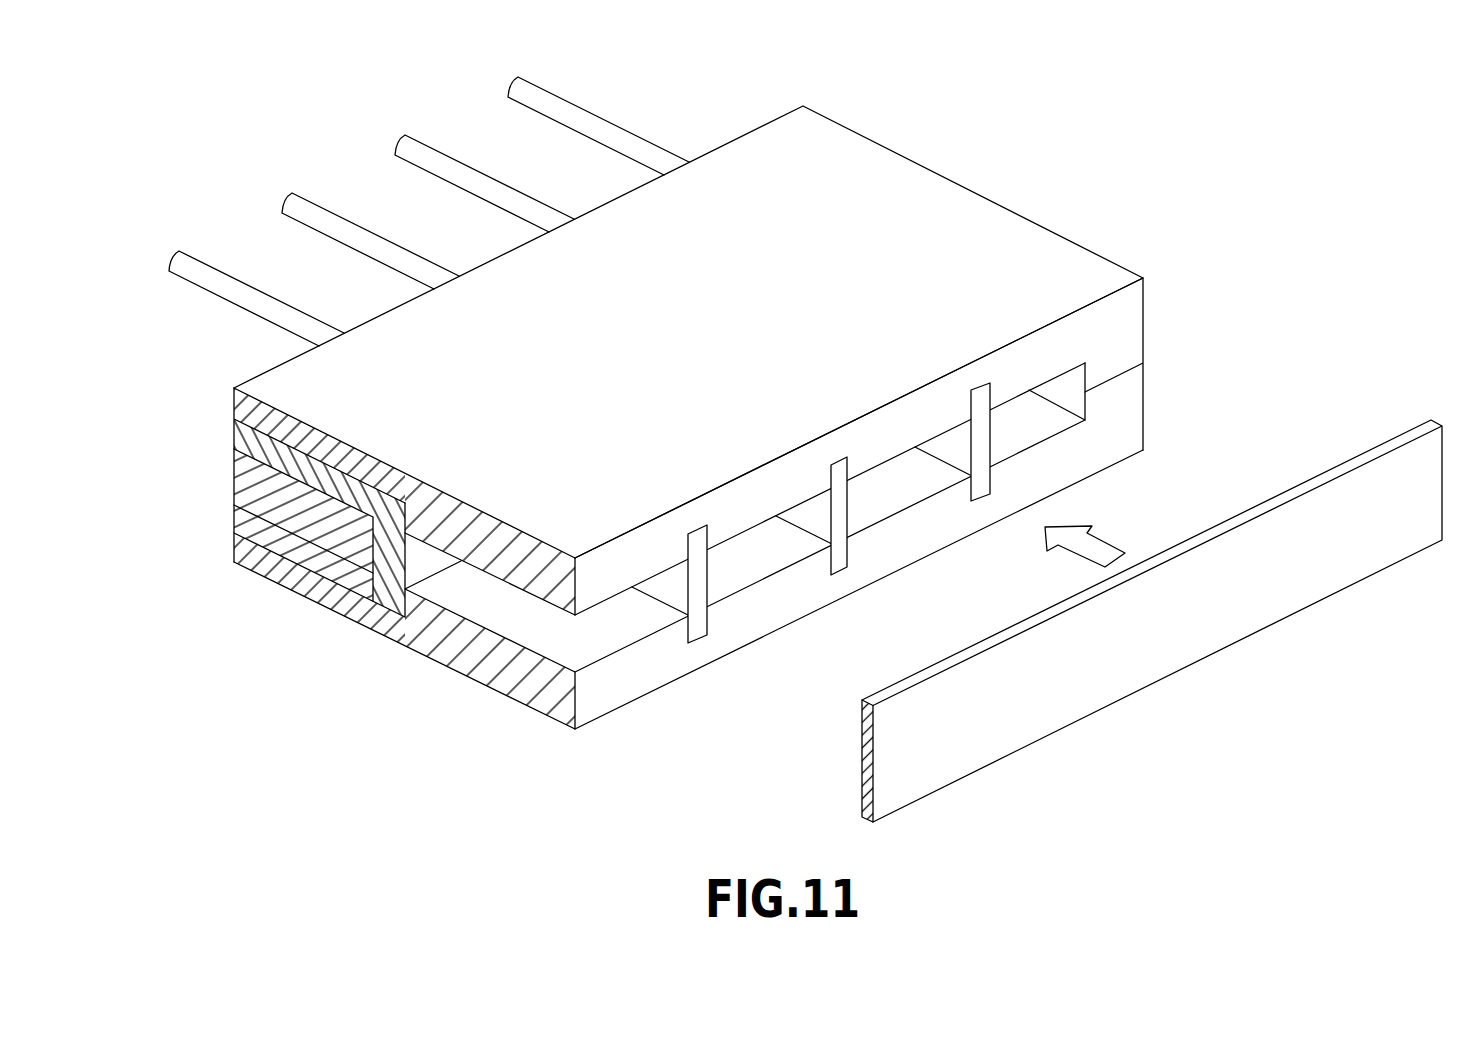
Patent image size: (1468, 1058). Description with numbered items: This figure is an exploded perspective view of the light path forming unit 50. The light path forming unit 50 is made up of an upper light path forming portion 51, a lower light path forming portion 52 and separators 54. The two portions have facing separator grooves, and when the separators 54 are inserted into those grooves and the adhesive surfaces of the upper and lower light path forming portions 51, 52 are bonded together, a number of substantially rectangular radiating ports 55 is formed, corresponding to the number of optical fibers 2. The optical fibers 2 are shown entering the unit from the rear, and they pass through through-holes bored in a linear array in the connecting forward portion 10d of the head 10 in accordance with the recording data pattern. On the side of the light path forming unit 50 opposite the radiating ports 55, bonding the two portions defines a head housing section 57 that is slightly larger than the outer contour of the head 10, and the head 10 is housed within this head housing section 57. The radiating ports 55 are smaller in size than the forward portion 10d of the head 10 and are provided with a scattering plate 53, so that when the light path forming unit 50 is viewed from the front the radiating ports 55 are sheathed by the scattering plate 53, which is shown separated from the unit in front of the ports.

The optical fibers 2 is at (587, 118).
The head 10 is at (283, 512).
The connecting forward portion 10d is at (420, 567).
The light path forming unit 50 is at (915, 142).
The upper light path forming portion 51 is at (973, 210).
The lower light path forming portion 52 is at (1130, 393).
The scattering plate 53 is at (1283, 523).
The separator 54 is at (697, 538).
The radiating ports 55 is at (722, 575).
The head housing section 57 is at (270, 446).